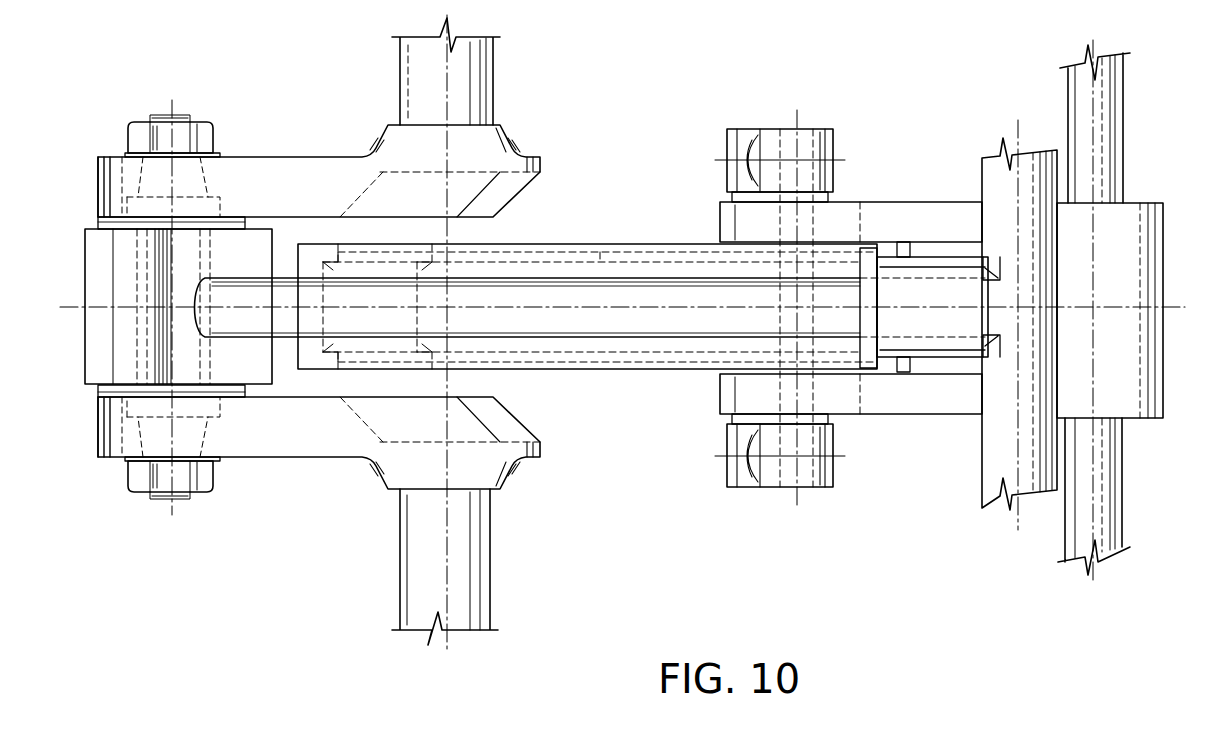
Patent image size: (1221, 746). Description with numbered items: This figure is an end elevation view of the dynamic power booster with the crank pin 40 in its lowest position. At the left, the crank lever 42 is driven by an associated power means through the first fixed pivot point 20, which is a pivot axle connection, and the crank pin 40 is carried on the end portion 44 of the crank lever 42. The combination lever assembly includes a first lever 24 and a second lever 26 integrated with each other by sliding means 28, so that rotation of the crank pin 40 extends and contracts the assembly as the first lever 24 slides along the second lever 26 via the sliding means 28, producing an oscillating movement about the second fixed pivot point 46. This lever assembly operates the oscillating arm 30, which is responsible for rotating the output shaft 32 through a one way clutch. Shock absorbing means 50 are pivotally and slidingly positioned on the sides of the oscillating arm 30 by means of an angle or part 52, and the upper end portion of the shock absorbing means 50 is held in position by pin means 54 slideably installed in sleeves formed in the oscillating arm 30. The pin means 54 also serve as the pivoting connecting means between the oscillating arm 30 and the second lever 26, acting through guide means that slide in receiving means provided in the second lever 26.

The first fixed pivot point 20 is at (485, 82).
The first lever 24 is at (558, 244).
The second lever 26 is at (946, 256).
The sliding means 28 is at (427, 262).
The oscillating arm 30 is at (1163, 386).
The output shaft 32 is at (1117, 174).
The crank pin 40 is at (185, 115).
The crank lever 42 is at (285, 158).
The end portion 44 is at (98, 188).
The second fixed pivot point 46 is at (982, 495).
The shock absorbing means 50 is at (753, 135).
The angle 52 is at (733, 130).
The pin means 54 is at (823, 147).